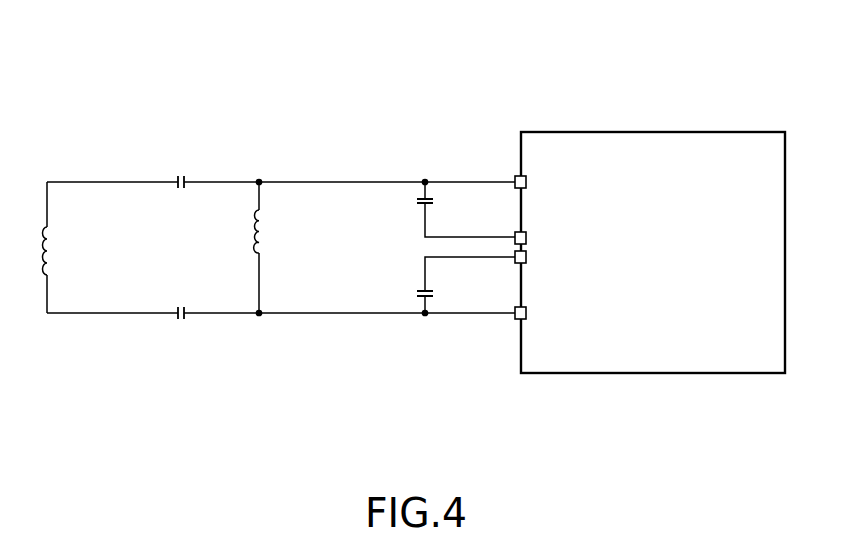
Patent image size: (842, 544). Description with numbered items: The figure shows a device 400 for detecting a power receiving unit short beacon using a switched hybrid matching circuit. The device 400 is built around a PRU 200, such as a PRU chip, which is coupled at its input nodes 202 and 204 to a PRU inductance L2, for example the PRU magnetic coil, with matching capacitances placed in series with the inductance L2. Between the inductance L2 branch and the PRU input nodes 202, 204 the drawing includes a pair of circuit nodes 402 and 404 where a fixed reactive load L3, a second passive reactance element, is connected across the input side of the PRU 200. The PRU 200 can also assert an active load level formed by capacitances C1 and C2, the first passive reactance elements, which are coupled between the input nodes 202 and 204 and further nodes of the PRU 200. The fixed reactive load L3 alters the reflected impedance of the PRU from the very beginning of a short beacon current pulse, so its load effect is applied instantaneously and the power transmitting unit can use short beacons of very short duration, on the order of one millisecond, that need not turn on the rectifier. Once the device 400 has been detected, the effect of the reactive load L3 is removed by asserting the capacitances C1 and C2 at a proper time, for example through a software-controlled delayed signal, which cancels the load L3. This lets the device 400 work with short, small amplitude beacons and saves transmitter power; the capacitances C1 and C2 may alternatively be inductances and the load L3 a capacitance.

The device 400 is at (128, 100).
The PRU 200 is at (654, 280).
The input node 202 is at (527, 182).
The input node 204 is at (527, 313).
The first node 402 is at (261, 180).
The second node 404 is at (261, 315).
The PRU inductance L2 is at (61, 251).
The fixed reactive load L3 is at (275, 247).
The capacitance C1 is at (466, 208).
The capacitance C2 is at (466, 286).